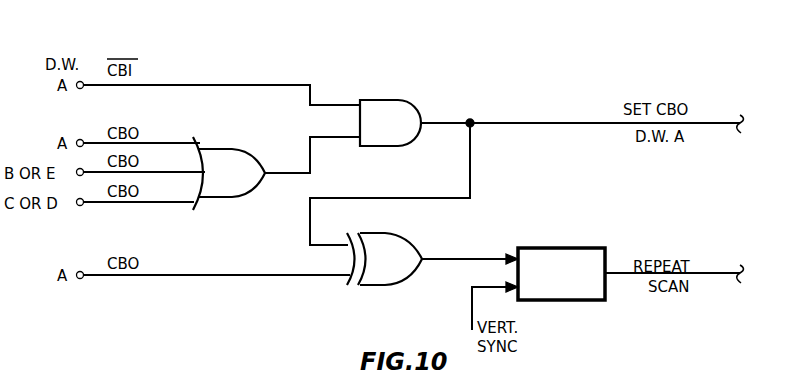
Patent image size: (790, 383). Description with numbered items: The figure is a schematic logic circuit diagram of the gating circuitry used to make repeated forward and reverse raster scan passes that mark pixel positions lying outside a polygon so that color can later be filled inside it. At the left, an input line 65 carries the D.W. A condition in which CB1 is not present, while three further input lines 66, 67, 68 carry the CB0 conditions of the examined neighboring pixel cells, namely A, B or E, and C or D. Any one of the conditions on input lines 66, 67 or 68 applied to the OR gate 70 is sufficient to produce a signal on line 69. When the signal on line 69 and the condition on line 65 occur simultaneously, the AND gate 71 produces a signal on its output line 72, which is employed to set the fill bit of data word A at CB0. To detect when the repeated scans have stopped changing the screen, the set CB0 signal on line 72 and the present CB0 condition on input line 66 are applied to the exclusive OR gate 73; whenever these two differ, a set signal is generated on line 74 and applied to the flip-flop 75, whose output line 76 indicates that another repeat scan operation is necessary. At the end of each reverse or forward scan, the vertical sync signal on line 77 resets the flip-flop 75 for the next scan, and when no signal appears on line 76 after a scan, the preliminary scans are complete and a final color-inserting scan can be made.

The input line 65 is at (262, 84).
The input line 66 is at (160, 142).
The input line 67 is at (172, 171).
The input line 68 is at (174, 204).
The line 69 is at (276, 172).
The OR gate 70 is at (232, 150).
The AND gate 71 is at (397, 96).
The output line 72 is at (444, 121).
The exclusive OR gate 73 is at (410, 243).
The line 74 is at (478, 257).
The flip-flop 75 is at (562, 247).
The output line 76 is at (622, 272).
The line 77 is at (469, 296).